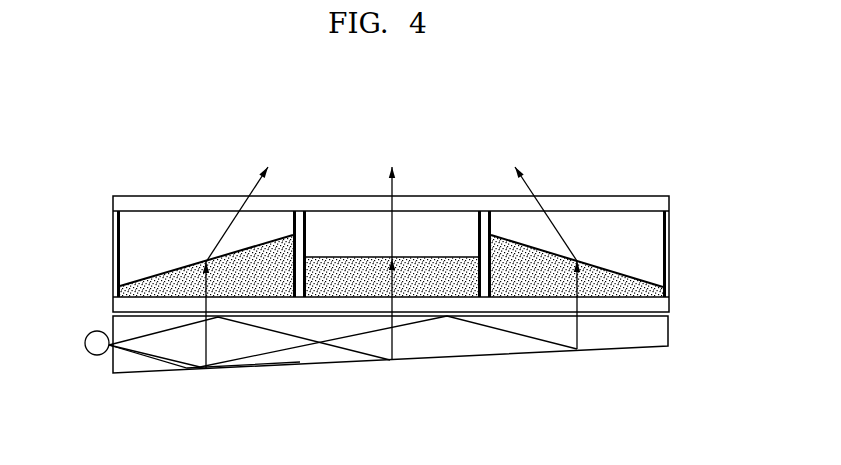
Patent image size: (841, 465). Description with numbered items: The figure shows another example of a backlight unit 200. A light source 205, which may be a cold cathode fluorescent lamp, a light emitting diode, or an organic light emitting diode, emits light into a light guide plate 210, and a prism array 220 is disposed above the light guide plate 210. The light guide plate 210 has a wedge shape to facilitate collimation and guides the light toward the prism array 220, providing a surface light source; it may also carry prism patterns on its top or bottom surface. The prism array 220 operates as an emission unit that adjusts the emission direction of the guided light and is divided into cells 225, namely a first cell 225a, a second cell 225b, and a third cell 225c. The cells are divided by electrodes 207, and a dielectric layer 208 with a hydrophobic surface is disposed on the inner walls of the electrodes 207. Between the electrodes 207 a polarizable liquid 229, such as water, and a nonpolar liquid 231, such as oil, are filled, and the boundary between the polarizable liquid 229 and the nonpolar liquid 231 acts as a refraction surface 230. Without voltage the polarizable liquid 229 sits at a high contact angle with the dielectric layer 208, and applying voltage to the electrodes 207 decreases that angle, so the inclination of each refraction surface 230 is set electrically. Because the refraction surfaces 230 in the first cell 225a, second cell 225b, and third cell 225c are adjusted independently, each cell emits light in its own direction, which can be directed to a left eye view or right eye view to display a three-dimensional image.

The backlight unit 200 is at (381, 243).
The light source 205 is at (95, 355).
The electrodes 207 is at (113, 225).
The dielectric layer 208 is at (120, 247).
The light guide plate 210 is at (668, 331).
The prism array 220 is at (352, 265).
The cells 225 is at (377, 265).
The first cell 225a is at (190, 265).
The second cell 225b is at (472, 158).
The third cell 225c is at (667, 158).
The polarizable liquid 229 is at (252, 288).
The refraction surface 230 is at (170, 270).
The nonpolar liquid 231 is at (175, 197).